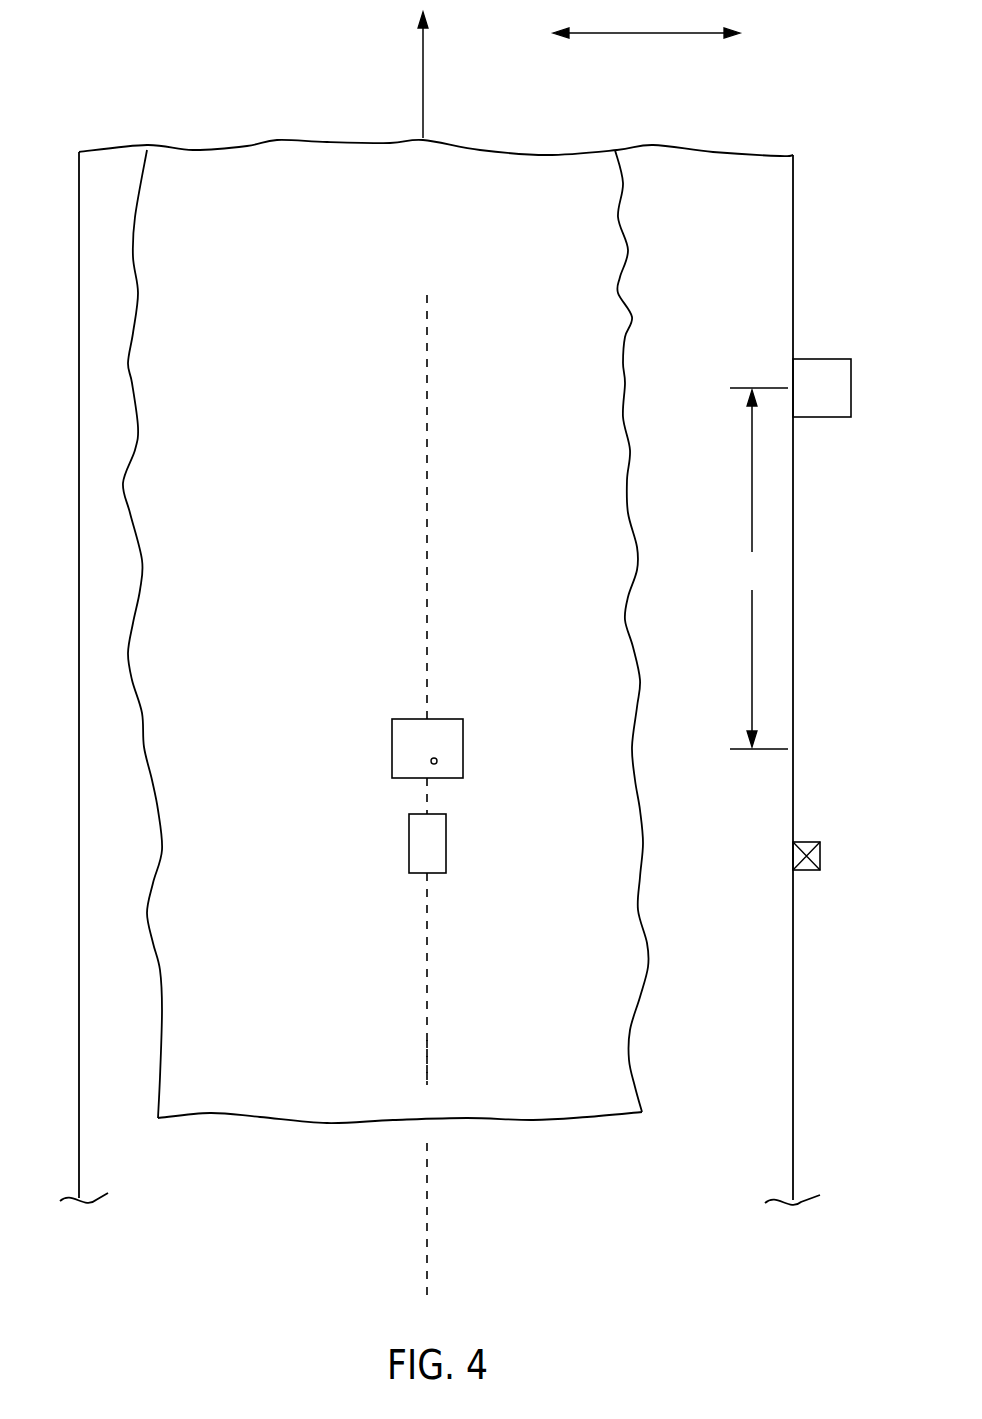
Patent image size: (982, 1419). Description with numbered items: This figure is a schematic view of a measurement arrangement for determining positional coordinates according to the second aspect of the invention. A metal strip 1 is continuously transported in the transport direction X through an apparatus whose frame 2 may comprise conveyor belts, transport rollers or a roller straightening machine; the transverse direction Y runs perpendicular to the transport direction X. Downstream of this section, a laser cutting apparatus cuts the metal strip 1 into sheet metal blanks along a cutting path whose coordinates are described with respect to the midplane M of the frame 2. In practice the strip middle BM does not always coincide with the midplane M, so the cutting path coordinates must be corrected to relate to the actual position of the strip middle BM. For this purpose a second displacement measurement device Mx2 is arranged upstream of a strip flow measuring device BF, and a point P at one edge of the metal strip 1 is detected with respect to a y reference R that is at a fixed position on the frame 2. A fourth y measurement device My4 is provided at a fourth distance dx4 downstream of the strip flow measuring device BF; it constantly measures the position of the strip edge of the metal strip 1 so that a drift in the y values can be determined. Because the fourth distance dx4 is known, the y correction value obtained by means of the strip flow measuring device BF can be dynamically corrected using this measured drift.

The metal strip 1 is at (274, 313).
The frame 2 is at (793, 256).
The transport direction X is at (435, 75).
The transverse direction Y is at (646, 20).
The midplane M is at (448, 798).
The strip middle BM is at (452, 1062).
The fourth y measurement device My4 is at (822, 388).
The fourth distance dx4 is at (759, 568).
The strip flow measuring device BF is at (463, 760).
The point P is at (437, 758).
The second displacement measurement device Mx2 is at (440, 861).
The y reference R is at (820, 850).